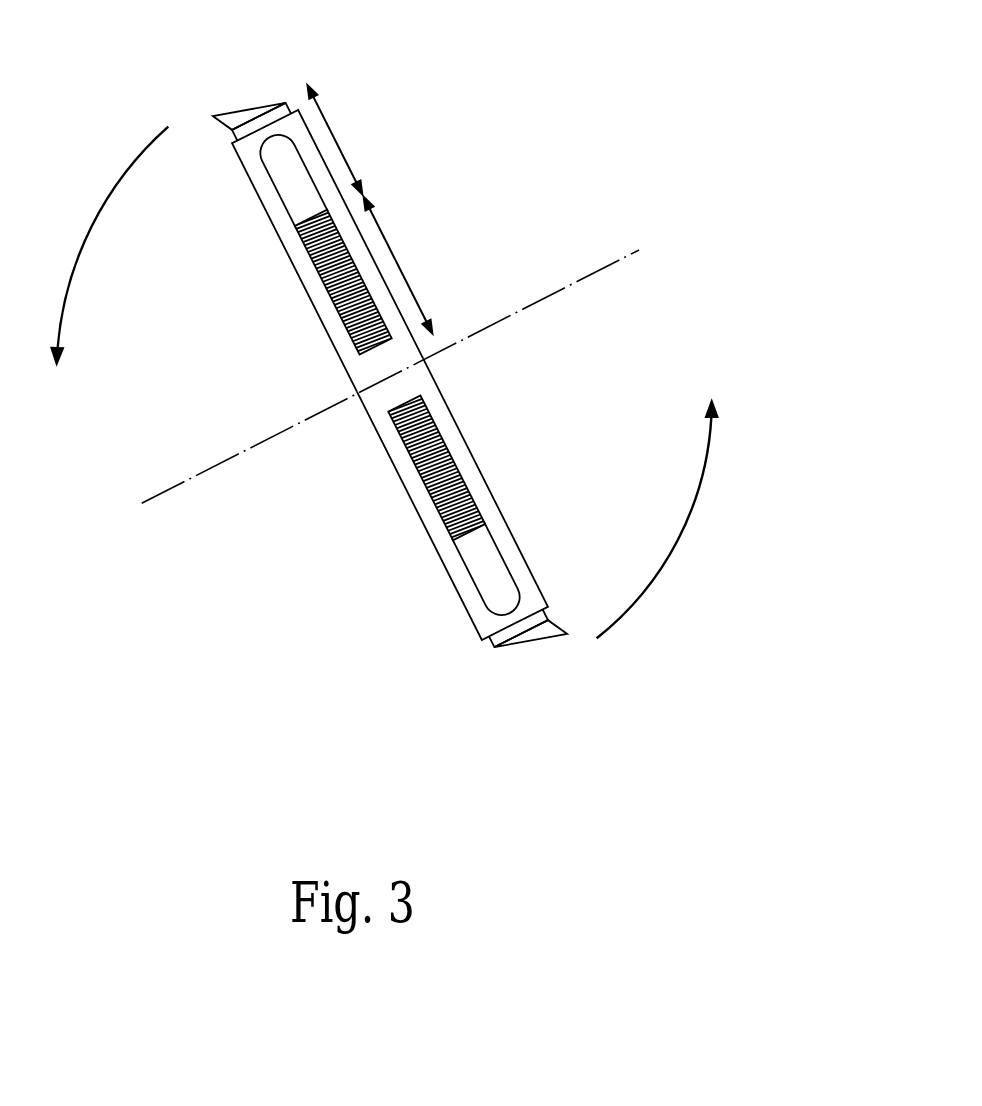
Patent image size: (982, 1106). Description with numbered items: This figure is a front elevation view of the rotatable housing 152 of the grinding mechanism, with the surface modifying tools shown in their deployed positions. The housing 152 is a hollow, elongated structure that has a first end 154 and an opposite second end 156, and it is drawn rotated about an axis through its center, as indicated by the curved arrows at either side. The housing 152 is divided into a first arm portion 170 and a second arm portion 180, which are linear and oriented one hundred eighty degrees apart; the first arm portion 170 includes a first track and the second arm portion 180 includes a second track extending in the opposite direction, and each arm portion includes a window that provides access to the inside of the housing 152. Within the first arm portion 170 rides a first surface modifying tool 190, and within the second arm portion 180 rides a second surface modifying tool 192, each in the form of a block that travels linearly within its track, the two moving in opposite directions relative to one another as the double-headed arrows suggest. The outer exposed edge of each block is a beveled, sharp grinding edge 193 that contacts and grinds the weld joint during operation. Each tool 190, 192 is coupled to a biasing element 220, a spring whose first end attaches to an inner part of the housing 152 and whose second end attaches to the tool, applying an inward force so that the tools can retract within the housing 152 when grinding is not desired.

The housing 152 is at (392, 377).
The first end 154 is at (245, 155).
The second end 156 is at (480, 637).
The first arm portion 170 is at (276, 206).
The second arm portion 180 is at (513, 570).
The first surface modifying tool 190 is at (287, 108).
The second surface modifying tool 192 is at (497, 641).
The grinding edge 193 is at (255, 105).
The biasing element 220 is at (325, 293).